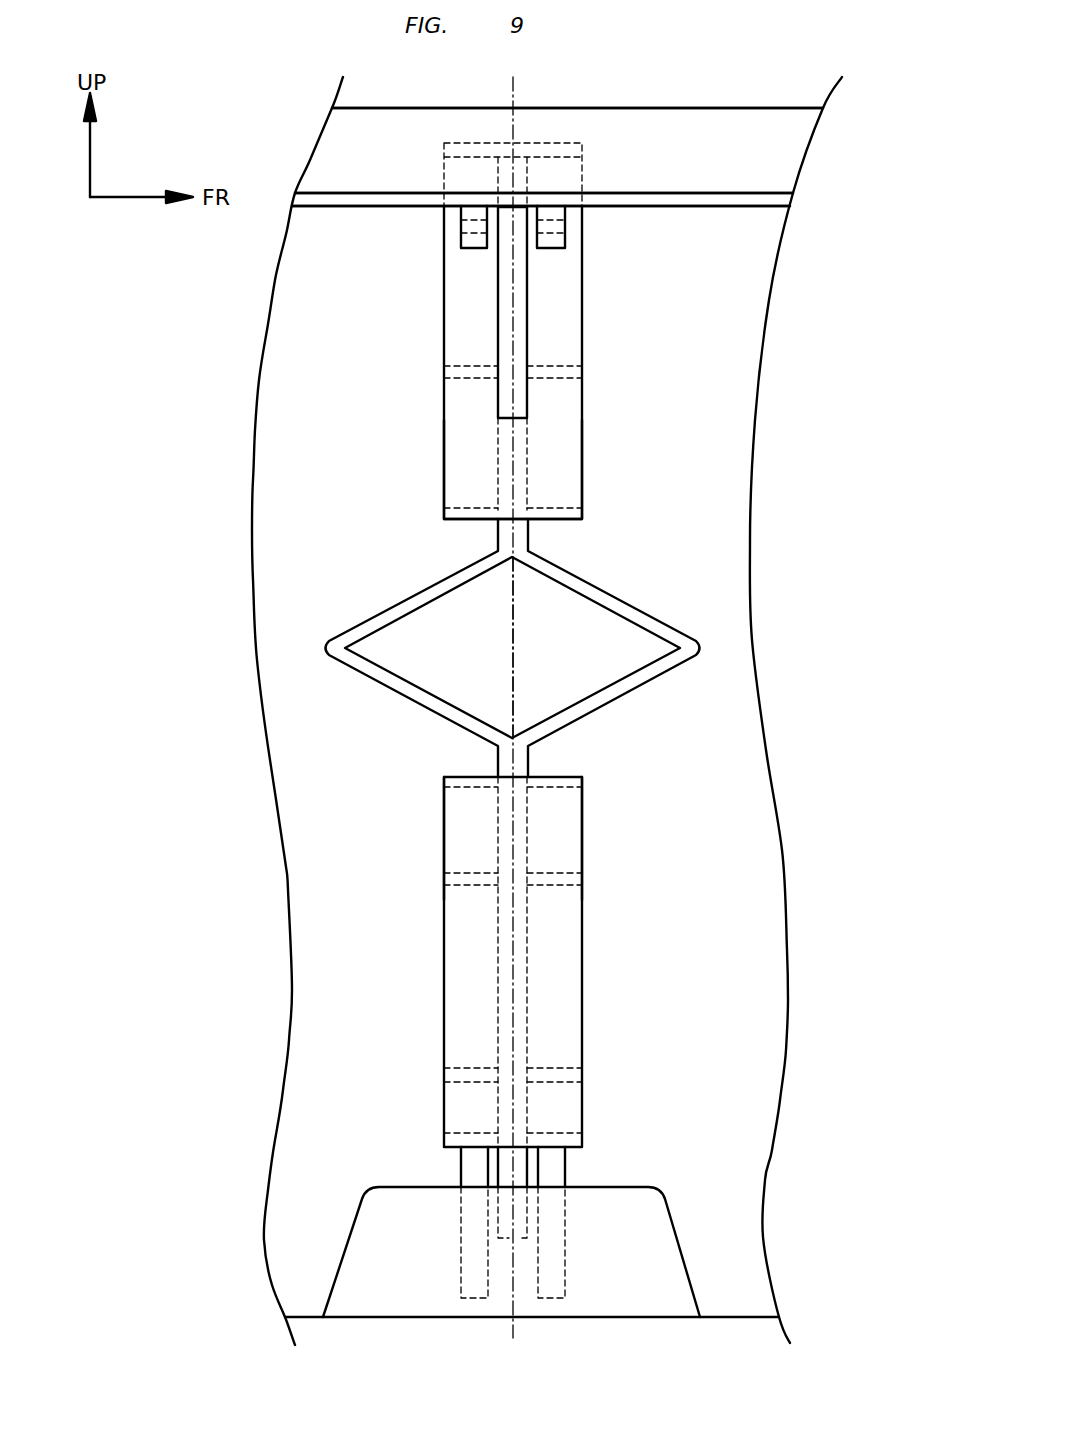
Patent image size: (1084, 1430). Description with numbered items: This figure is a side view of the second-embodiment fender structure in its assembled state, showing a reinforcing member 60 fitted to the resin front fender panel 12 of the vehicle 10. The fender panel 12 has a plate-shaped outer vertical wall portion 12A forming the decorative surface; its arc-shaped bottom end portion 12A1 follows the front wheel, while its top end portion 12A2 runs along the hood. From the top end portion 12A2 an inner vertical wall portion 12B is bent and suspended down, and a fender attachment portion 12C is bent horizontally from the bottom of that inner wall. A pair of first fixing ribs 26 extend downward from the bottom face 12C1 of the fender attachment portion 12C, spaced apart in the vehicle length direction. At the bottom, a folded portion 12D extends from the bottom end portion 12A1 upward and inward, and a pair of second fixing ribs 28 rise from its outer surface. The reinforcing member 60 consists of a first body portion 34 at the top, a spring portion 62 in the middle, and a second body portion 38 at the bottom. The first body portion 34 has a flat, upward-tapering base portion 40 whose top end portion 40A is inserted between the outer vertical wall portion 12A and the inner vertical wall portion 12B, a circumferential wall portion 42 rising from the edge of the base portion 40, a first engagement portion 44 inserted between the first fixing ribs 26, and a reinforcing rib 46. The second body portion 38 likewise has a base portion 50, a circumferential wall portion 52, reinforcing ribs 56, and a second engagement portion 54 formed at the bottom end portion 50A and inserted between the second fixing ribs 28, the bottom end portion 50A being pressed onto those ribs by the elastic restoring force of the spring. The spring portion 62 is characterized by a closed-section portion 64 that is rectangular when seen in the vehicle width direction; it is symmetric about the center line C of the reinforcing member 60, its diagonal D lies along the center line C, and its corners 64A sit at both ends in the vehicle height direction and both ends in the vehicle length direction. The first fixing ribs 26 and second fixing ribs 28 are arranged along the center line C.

The vehicle 10 is at (593, 711).
The front fender panel 12 is at (806, 575).
The outer vertical wall portion 12A is at (755, 840).
The bottom end portion 12A1 is at (733, 1300).
The top end portion 12A2 is at (680, 106).
The inner vertical wall portion 12B is at (778, 145).
The fender attachment portion 12C is at (737, 191).
The bottom face 12C1 is at (725, 210).
The folded portion 12D is at (652, 1243).
The first fixing ribs 26 is at (480, 250).
The second fixing ribs 28 is at (460, 1165).
The first body portion 34 is at (541, 287).
The second body portion 38 is at (555, 1076).
The base portion 40 is at (540, 432).
The top end portion 40A is at (518, 150).
The circumferential wall portion 42 is at (553, 467).
The first engagement portion 44 is at (530, 322).
The reinforcing rib 46 is at (473, 363).
The base portion 50 is at (488, 932).
The bottom end portion 50A is at (520, 1142).
The circumferential wall portion 52 is at (560, 837).
The second engagement portion 54 is at (527, 1215).
The reinforcing ribs 56 is at (557, 1060).
The reinforcing member 60 is at (519, 649).
The spring portion 62 is at (519, 649).
The closed-section portion 64 is at (518, 648).
The corners 64A is at (532, 543).
The center line C is at (510, 100).
The diagonal D is at (510, 634).